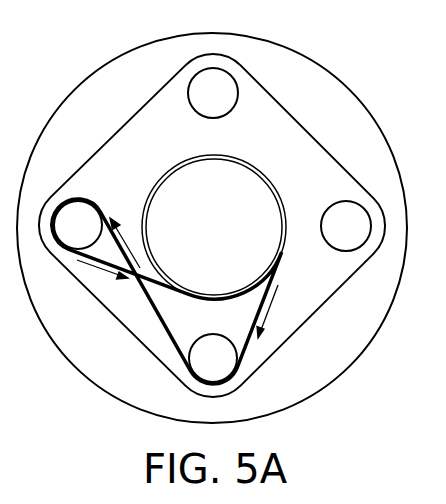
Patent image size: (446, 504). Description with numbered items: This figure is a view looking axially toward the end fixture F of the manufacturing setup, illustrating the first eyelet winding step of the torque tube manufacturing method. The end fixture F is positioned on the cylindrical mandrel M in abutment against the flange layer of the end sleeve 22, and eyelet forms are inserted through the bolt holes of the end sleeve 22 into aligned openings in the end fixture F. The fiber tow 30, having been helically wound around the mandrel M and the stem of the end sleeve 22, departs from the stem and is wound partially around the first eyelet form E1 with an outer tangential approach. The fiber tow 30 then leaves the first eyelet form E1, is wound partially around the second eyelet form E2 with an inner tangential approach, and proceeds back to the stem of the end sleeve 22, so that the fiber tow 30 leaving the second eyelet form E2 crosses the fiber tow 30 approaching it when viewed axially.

The end fixture F is at (138, 47).
The end sleeve 22 is at (292, 113).
The mandrel M is at (195, 226).
The first eyelet form E1 is at (198, 368).
The second eyelet form E2 is at (65, 239).
The fiber tow 30 is at (160, 320).